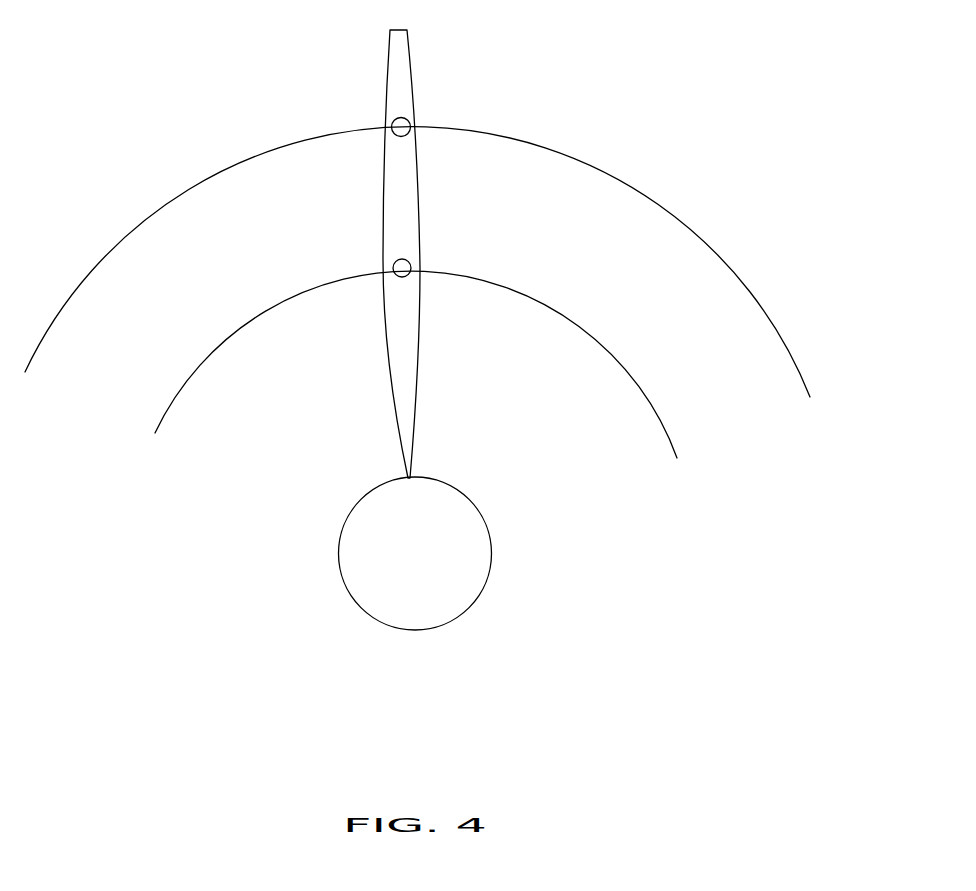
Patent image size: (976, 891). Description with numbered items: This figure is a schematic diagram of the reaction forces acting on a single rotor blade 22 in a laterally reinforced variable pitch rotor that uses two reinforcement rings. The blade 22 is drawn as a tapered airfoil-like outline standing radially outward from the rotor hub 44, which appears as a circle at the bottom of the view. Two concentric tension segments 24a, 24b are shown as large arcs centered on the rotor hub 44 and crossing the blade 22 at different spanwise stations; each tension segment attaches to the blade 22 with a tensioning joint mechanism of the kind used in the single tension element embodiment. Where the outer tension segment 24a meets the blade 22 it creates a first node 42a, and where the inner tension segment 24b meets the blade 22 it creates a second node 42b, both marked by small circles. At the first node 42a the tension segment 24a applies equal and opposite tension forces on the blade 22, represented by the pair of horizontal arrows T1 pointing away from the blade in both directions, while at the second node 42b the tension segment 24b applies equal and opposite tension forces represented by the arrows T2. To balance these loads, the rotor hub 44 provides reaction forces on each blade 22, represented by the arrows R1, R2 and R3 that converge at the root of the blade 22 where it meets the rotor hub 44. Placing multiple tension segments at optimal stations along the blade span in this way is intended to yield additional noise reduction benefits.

The blade 22 is at (400, 85).
The tension segment 24a is at (660, 202).
The tension segment 24b is at (575, 318).
The first node 42a is at (405, 120).
The second node 42b is at (405, 262).
The rotor hub 44 is at (490, 570).
The tension force arrows T1 is at (493, 127).
The tension force arrows T2 is at (498, 268).
The reaction force arrow R1 is at (376, 488).
The reaction force arrow R2 is at (445, 478).
The reaction force arrow R3 is at (408, 513).